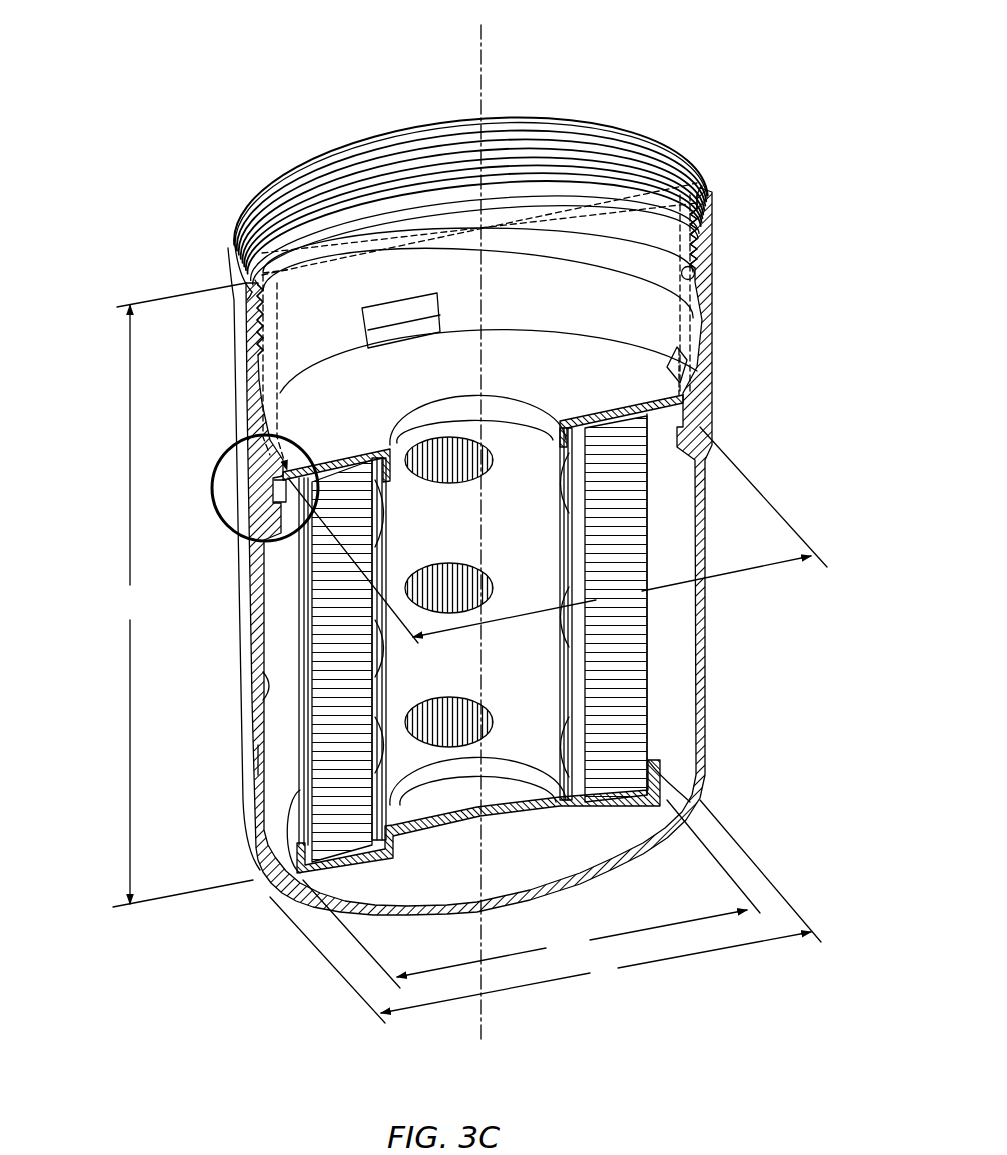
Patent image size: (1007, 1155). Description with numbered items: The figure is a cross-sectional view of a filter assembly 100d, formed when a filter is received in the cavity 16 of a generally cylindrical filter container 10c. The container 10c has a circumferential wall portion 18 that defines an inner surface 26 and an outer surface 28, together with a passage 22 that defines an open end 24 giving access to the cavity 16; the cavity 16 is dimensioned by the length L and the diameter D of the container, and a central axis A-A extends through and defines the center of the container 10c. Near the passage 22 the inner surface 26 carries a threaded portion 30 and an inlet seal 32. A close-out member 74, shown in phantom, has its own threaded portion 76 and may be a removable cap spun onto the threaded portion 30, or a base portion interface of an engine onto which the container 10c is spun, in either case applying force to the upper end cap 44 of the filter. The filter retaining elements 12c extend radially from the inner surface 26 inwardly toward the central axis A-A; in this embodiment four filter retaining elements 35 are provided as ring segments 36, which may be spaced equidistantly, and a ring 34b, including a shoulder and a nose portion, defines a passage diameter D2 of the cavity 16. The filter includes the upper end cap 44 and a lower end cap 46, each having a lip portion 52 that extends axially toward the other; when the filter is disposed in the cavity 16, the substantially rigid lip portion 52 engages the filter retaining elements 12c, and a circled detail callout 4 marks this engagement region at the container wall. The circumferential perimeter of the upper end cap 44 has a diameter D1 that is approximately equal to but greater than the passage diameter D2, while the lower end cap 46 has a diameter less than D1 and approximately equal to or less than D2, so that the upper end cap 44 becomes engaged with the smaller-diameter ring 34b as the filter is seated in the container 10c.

The filter assembly 100d is at (657, 61).
The filter container 10c is at (805, 456).
The filter retaining element 12c is at (378, 292).
The cavity 16 is at (672, 662).
The circumferential wall portion 18 is at (243, 600).
The passage 22 is at (673, 178).
The open end 24 is at (705, 174).
The inner surface 26 is at (263, 680).
The outer surface 28 is at (257, 758).
The threaded portion 30 is at (197, 124).
The inlet seal 32 is at (700, 283).
The ring 34b is at (444, 297).
The ring segment 36 is at (247, 487).
The filter retaining elements 35 is at (310, 343).
The upper end cap 44 is at (622, 385).
The lower end cap 46 is at (640, 818).
The lip portion 52 is at (283, 466).
The close-out member 74 is at (255, 215).
The threaded portion 76 is at (256, 310).
The detail circle 4 is at (213, 478).
The central axis A is at (478, 531).
The length L is at (183, 595).
The diameter D is at (545, 911).
The upper end cap diameter D1 is at (557, 535).
The passage diameter D2 is at (531, 894).